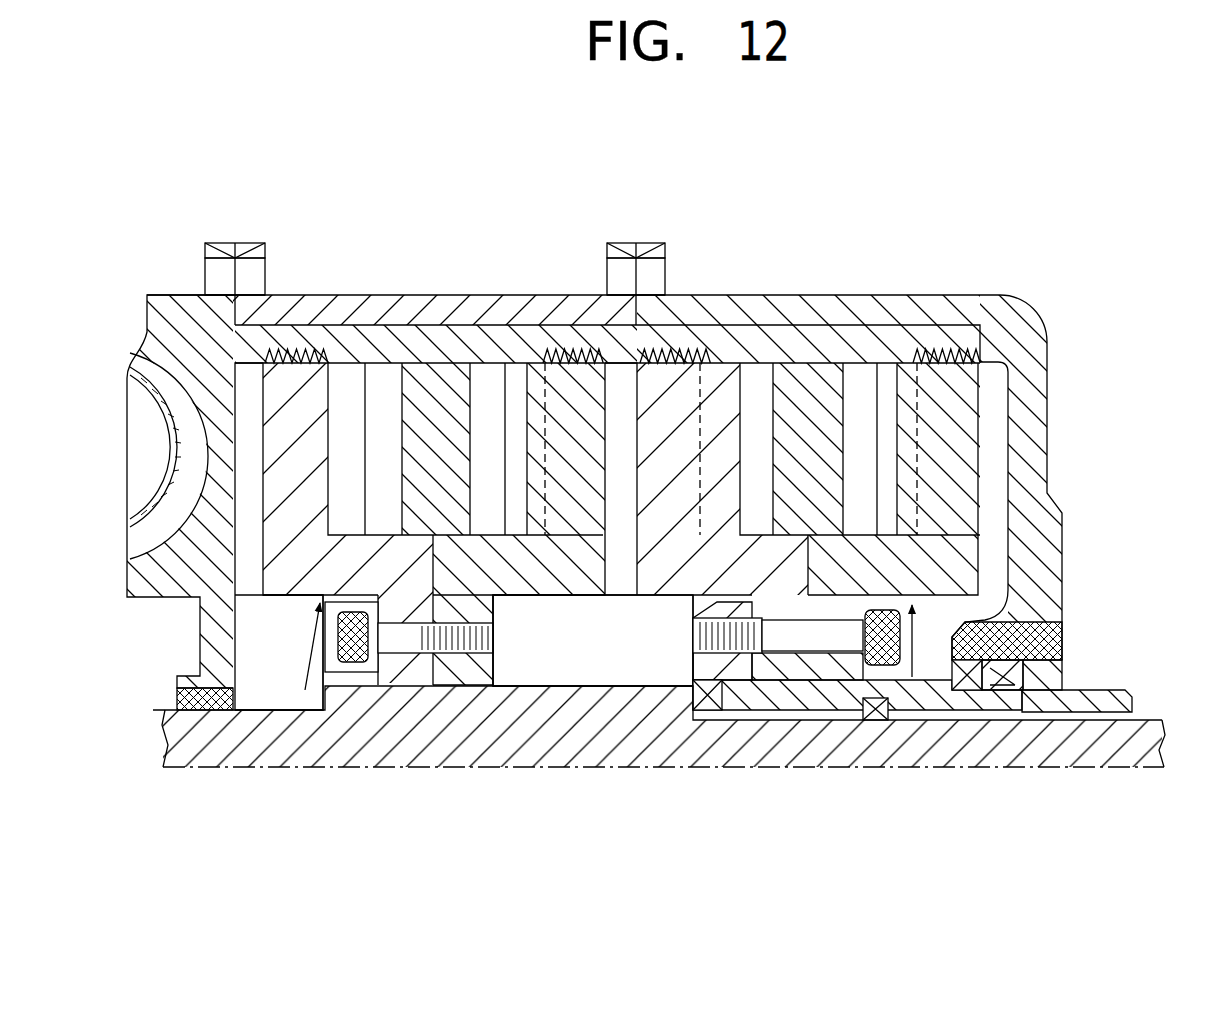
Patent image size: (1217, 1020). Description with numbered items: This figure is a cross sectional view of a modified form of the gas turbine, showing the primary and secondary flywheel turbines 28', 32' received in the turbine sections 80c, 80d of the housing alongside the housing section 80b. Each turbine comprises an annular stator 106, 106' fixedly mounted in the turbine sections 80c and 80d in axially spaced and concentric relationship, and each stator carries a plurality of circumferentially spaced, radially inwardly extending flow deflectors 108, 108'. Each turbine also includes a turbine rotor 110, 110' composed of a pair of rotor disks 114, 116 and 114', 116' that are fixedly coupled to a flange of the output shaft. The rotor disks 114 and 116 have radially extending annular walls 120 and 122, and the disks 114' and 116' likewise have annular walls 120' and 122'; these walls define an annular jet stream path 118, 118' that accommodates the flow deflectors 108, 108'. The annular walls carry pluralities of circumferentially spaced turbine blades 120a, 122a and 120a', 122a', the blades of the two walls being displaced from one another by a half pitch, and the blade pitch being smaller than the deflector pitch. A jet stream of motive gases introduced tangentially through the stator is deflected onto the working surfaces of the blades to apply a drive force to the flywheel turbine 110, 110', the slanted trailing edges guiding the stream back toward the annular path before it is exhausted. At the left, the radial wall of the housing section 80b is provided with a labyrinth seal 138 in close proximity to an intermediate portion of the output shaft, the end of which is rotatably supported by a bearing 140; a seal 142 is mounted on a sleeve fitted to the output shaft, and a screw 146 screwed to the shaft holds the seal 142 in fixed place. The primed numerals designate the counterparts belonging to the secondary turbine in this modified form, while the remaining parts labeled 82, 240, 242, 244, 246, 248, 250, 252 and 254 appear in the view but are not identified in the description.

The housing section 80b is at (160, 295).
The turbine section 80c is at (377, 293).
The turbine section 80d is at (1012, 297).
The bolt 82 is at (236, 243).
The annular stator 106 is at (436, 256).
The field coil 106' is at (808, 259).
The flow deflectors 108 is at (407, 364).
The armature 108' is at (823, 364).
The turbine rotor 110 is at (422, 613).
The rotor 110' is at (826, 613).
The rotor disk 114 is at (255, 711).
The hub 114' is at (593, 705).
The rotor disk 116 is at (503, 595).
The hub plate 116' is at (953, 521).
The annular jet stream path 118 is at (497, 364).
The armature ring 118' is at (884, 364).
The annular wall 120 is at (211, 536).
The hub sleeve 120' is at (622, 594).
The turbine blades 120a is at (327, 364).
The sleeve gap 120a' is at (732, 364).
The annular wall 122 is at (521, 595).
The rotor plate 122' is at (1010, 449).
The turbine blades 122a is at (434, 278).
The spring 122a' is at (833, 278).
The first clutch 28' is at (381, 217).
The second clutch 32' is at (787, 221).
The labyrinth seal 138 is at (177, 690).
The bearing 140 is at (1010, 640).
The seal 142 is at (1000, 672).
The screw 146 is at (1040, 675).
The shaft 240 is at (1095, 750).
The lock washer 242 is at (353, 683).
The bolt 244 is at (408, 640).
The ring 246 is at (1107, 693).
The bearing plate 248 is at (708, 712).
The bearing 250 is at (900, 720).
The bolt 252 is at (787, 660).
The lock nut 254 is at (837, 633).